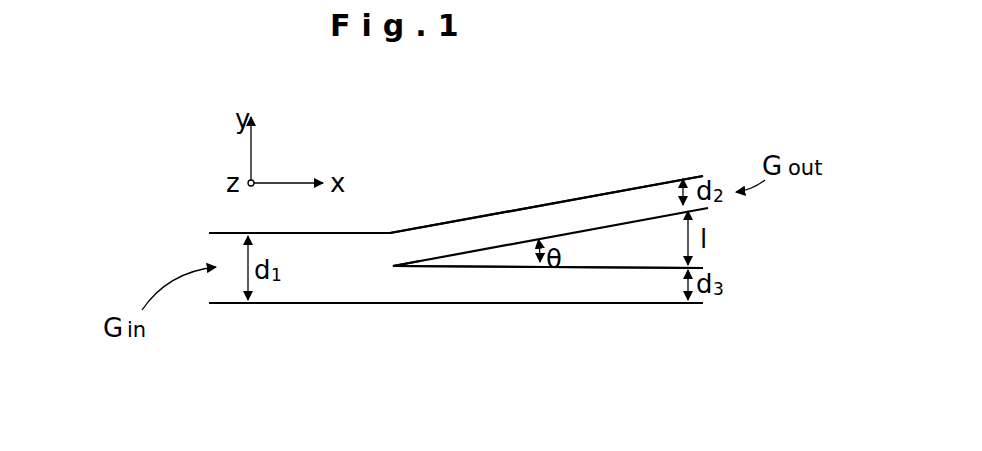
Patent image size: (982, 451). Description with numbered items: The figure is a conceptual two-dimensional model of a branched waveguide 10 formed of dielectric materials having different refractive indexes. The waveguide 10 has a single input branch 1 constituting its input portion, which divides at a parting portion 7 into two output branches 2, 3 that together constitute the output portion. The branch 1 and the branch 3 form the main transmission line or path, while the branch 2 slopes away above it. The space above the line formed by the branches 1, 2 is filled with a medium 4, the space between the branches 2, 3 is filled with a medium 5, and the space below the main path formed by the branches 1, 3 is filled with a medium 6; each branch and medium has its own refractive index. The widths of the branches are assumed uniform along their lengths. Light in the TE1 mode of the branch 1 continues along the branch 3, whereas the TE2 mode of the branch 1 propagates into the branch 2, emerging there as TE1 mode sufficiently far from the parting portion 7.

The branch 1 is at (305, 288).
The branch 2 is at (507, 225).
The branch 3 is at (522, 288).
The medium 4 is at (433, 205).
The medium 5 is at (622, 242).
The medium 6 is at (459, 338).
The parting portion 7 is at (394, 272).
The waveguide 10 is at (581, 346).